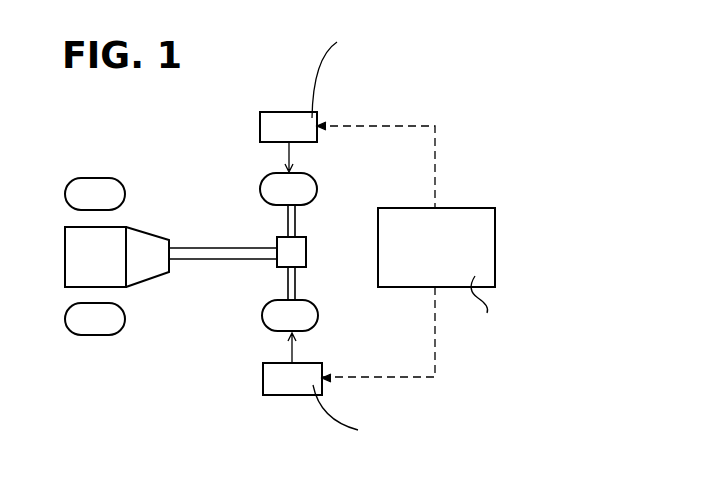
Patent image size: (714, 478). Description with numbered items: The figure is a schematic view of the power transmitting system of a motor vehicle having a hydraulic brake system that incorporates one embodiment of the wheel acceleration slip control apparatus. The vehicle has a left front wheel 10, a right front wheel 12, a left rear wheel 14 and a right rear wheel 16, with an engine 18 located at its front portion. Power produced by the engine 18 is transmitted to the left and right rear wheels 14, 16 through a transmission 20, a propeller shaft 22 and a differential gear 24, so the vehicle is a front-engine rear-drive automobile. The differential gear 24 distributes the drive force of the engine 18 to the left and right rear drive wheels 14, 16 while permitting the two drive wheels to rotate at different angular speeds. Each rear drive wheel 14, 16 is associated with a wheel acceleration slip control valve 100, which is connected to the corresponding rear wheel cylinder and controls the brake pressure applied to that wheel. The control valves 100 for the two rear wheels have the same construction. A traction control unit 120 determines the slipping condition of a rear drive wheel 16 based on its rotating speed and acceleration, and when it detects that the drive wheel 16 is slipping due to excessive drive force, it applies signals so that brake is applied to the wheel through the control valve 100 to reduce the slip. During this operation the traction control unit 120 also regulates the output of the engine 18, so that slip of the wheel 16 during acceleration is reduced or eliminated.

The left front wheel 10 is at (98, 327).
The right front wheel 12 is at (93, 186).
The left rear wheel 14 is at (313, 316).
The right rear wheel 16 is at (312, 190).
The engine 18 is at (70, 258).
The transmission 20 is at (150, 242).
The propeller shaft 22 is at (218, 250).
The differential gear 24 is at (301, 250).
The wheel acceleration slip control valve 100 is at (291, 120).
The traction control unit 120 is at (491, 246).